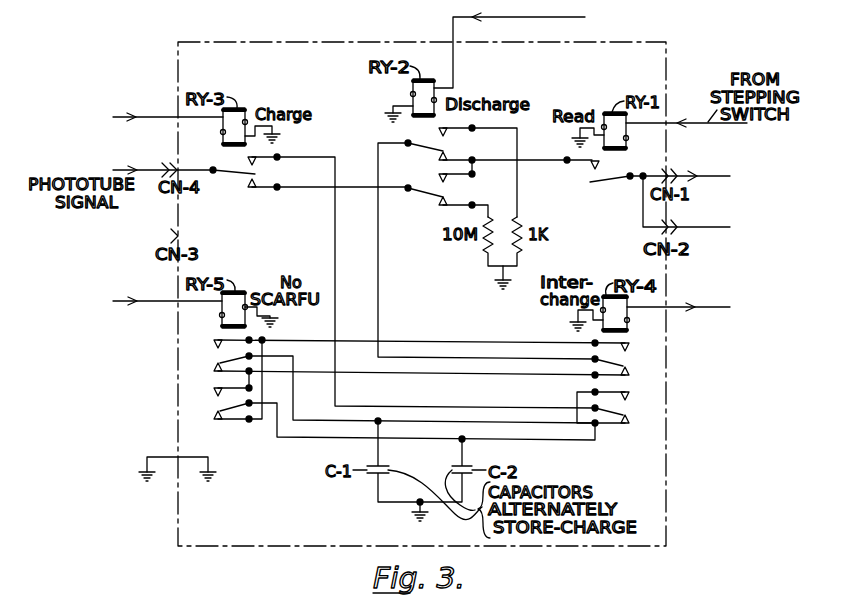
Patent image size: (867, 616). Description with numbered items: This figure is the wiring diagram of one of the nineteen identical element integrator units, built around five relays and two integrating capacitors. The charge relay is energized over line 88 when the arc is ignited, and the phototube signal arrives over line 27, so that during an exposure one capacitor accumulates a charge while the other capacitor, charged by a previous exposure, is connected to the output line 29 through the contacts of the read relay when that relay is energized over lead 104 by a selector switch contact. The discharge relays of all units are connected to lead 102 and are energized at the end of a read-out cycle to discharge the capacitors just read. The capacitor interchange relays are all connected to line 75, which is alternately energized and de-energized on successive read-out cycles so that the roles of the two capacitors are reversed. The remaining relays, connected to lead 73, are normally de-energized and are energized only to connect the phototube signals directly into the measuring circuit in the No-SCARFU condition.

The line 27 is at (150, 168).
The output line 29 is at (712, 176).
The lead 73 is at (162, 299).
The line 75 is at (707, 307).
The line 88 is at (165, 116).
The lead 102 is at (520, 17).
The lead 104 is at (693, 125).